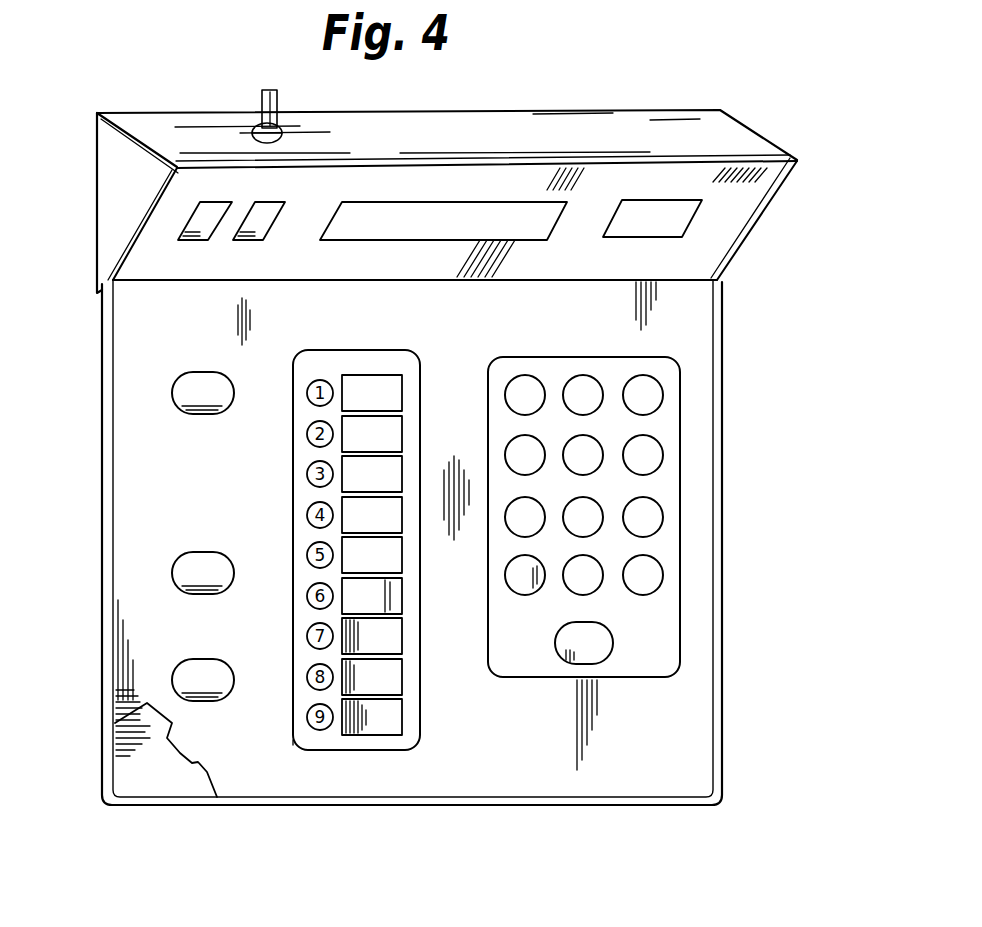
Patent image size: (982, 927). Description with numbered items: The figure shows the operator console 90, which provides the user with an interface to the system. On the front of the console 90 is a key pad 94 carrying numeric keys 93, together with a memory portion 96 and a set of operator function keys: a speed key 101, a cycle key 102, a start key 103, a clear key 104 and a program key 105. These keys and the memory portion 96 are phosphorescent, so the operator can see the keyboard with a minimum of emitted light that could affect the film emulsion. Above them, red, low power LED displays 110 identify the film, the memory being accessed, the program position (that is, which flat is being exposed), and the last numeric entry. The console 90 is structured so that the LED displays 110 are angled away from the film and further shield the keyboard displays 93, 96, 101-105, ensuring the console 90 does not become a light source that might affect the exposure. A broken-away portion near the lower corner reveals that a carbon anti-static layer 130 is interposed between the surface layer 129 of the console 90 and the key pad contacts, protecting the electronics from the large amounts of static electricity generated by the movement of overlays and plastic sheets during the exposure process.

The operator console 90 is at (748, 437).
The numeric keys 93 is at (527, 373).
The key pad 94 is at (673, 605).
The memory portion 96 is at (378, 524).
The speed key 101 is at (172, 395).
The cycle key 102 is at (172, 578).
The start key 103 is at (172, 688).
The clear key 104 is at (663, 569).
The program key 105 is at (613, 645).
The LED displays 110 is at (213, 258).
The surface layer 129 is at (220, 767).
The carbon anti-static layer 130 is at (177, 773).